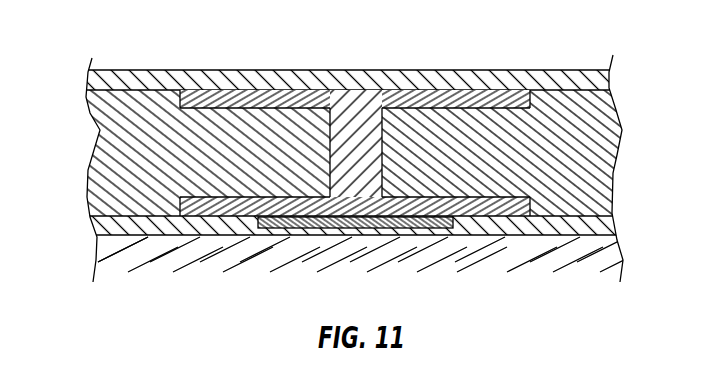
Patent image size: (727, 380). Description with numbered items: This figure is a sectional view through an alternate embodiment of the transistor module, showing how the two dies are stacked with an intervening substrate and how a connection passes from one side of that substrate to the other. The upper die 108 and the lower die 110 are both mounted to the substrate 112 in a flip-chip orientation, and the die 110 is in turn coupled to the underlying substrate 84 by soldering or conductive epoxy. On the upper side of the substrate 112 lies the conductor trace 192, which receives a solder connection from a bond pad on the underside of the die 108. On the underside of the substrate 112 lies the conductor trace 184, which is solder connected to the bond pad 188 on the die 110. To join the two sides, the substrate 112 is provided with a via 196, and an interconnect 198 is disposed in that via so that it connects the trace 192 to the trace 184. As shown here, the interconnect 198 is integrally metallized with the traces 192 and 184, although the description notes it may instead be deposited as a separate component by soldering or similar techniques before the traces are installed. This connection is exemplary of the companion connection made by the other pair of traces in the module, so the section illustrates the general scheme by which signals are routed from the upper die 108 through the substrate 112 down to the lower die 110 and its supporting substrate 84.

The die 108 is at (523, 72).
The substrate 112 is at (123, 90).
The conductor trace 192 is at (192, 98).
The via 196 is at (328, 127).
The interconnect 198 is at (368, 120).
The conductor trace 184 is at (222, 212).
The bond pad 188 is at (340, 221).
The die 110 is at (510, 227).
The substrate 84 is at (456, 260).